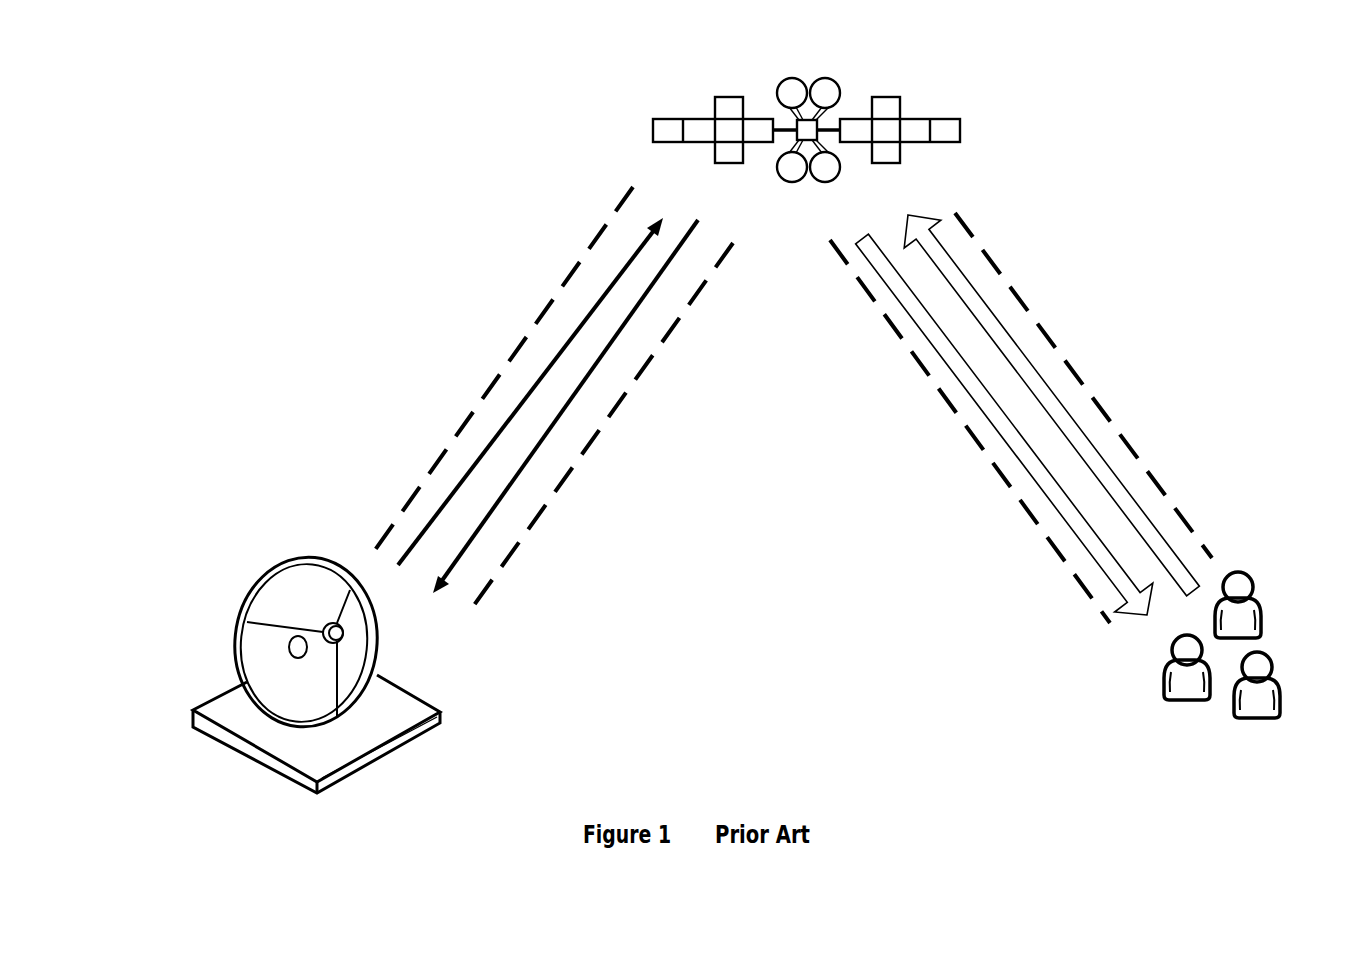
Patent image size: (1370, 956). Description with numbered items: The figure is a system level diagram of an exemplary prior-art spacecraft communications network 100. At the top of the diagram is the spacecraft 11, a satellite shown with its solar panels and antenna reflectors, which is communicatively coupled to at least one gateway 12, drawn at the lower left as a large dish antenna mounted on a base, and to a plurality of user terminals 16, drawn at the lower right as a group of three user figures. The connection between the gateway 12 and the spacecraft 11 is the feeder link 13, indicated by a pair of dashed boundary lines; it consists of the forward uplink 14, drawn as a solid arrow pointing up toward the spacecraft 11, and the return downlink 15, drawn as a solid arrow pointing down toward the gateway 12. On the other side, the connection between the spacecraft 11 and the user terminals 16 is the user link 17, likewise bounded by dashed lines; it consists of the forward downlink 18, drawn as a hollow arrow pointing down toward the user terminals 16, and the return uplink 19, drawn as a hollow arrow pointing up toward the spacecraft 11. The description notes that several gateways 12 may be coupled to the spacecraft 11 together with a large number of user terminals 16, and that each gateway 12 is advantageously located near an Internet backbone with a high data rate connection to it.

The spacecraft communications network 100 is at (328, 141).
The spacecraft 11 is at (830, 79).
The gateway 12 is at (410, 742).
The feeder link 13 is at (492, 384).
The forward uplink 14 is at (623, 266).
The return downlink 15 is at (485, 522).
The user terminals 16 is at (1228, 752).
The user link 17 is at (1050, 337).
The forward downlink 18 is at (1130, 615).
The return uplink 19 is at (1128, 490).